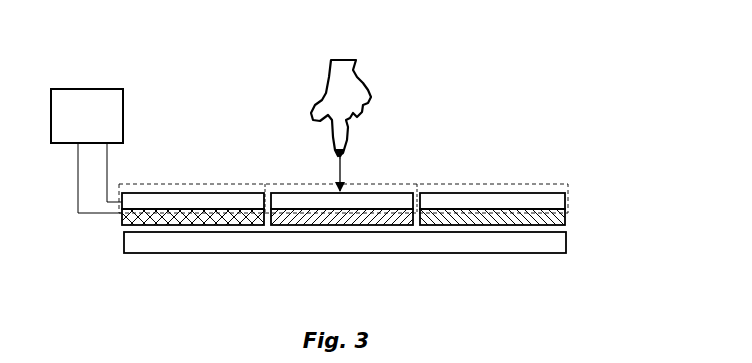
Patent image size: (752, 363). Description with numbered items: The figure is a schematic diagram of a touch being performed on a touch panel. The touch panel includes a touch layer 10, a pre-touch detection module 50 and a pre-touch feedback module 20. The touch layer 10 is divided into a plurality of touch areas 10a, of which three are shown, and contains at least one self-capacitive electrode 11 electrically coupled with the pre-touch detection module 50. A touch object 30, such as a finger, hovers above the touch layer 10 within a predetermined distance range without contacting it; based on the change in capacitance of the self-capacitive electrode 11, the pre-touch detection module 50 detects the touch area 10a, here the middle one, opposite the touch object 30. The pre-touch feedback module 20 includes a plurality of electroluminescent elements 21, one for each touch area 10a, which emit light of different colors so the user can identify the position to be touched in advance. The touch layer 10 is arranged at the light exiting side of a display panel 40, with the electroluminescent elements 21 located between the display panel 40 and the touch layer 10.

The touch layer 10 is at (375, 185).
The touch areas 10a is at (502, 183).
The self-capacitive electrode 11 is at (520, 201).
The pre-touch feedback module 20 is at (332, 255).
The electroluminescent elements 21 is at (122, 219).
The touch object 30 is at (333, 142).
The display panel 40 is at (130, 243).
The pre-touch detection module 50 is at (87, 151).